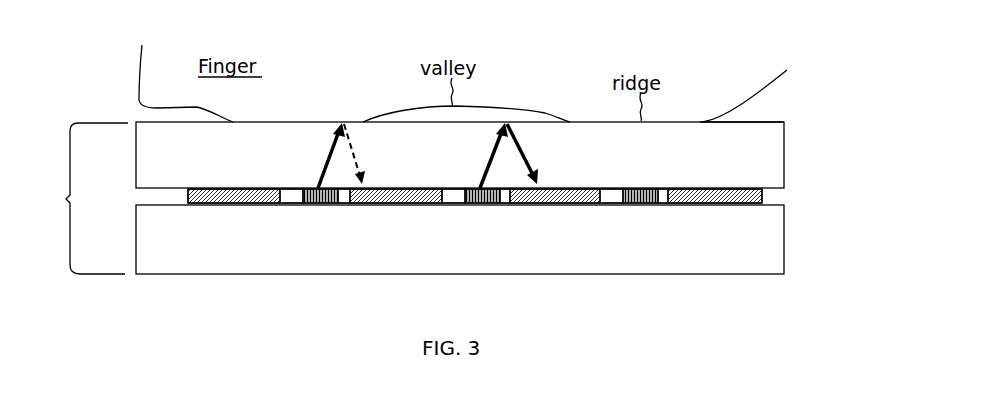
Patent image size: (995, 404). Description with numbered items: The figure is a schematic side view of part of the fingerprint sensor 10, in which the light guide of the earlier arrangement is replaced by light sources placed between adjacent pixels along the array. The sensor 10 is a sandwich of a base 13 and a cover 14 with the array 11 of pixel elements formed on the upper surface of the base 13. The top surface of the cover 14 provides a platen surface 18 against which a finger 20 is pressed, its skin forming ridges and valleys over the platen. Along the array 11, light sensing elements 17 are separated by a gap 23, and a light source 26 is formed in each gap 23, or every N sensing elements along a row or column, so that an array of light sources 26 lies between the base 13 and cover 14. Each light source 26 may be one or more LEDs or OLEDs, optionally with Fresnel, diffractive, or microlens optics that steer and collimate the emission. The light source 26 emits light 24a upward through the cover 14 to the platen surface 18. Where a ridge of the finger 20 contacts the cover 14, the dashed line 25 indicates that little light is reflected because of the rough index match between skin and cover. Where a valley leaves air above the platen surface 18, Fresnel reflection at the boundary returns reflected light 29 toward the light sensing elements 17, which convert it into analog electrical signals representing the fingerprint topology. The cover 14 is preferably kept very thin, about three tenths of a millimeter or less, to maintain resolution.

The sensor 10 is at (66, 199).
The array 11 is at (135, 190).
The base 13 is at (785, 232).
The cover 14 is at (785, 172).
The sensing element 17 is at (230, 204).
The platen surface 18 is at (767, 122).
The finger 20 is at (787, 77).
The gap 23 is at (290, 204).
The light 24a is at (326, 168).
The dashed line 25 is at (357, 146).
The light source 26 is at (325, 204).
The reflected light 29 is at (527, 146).